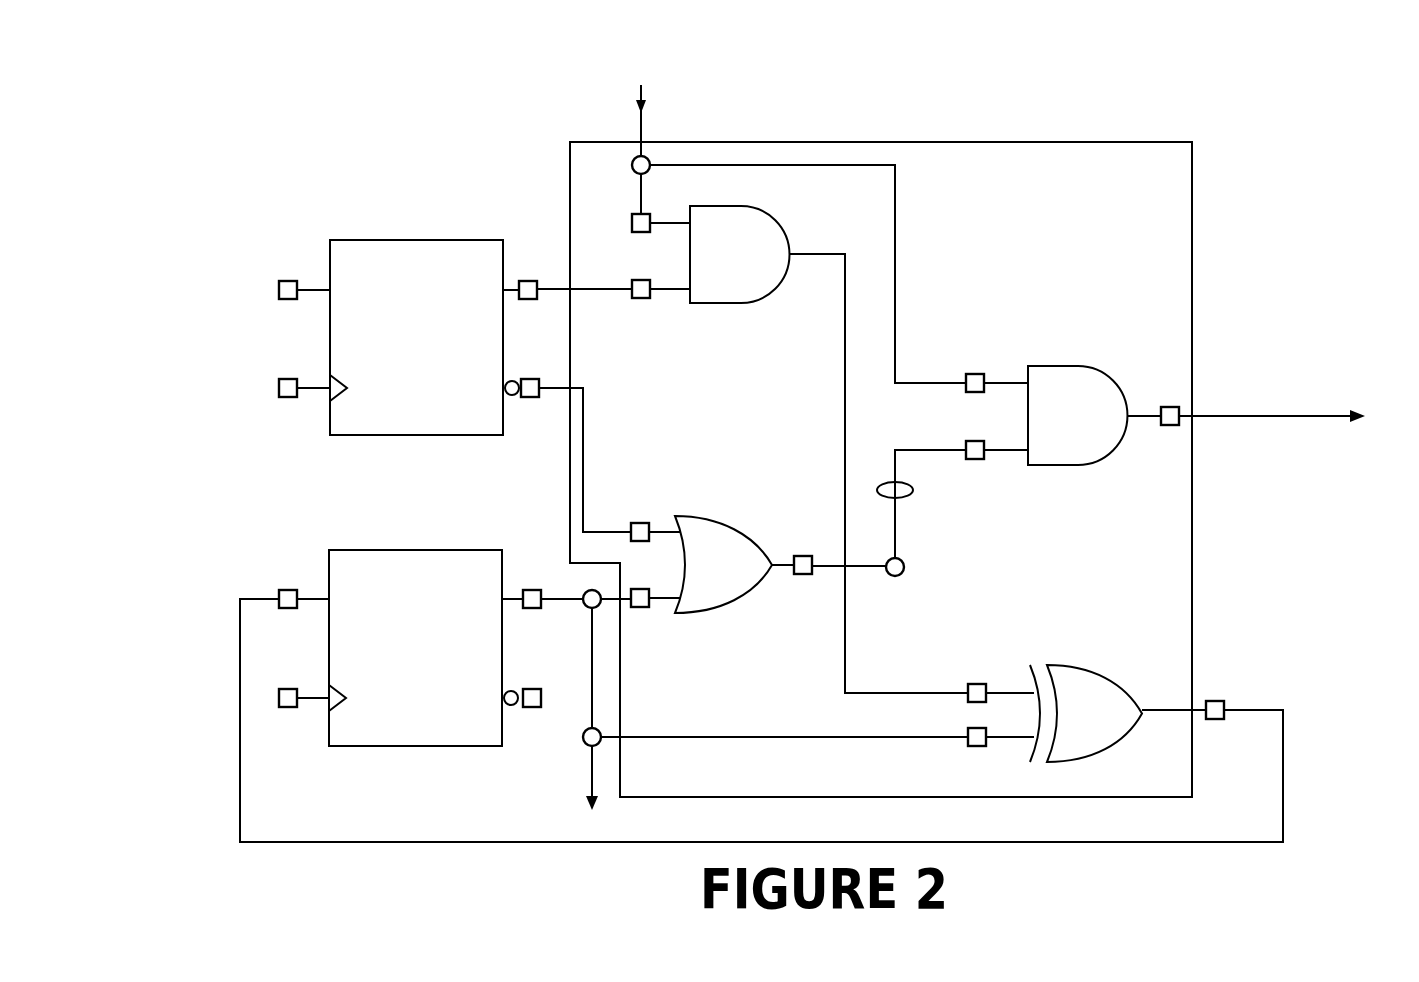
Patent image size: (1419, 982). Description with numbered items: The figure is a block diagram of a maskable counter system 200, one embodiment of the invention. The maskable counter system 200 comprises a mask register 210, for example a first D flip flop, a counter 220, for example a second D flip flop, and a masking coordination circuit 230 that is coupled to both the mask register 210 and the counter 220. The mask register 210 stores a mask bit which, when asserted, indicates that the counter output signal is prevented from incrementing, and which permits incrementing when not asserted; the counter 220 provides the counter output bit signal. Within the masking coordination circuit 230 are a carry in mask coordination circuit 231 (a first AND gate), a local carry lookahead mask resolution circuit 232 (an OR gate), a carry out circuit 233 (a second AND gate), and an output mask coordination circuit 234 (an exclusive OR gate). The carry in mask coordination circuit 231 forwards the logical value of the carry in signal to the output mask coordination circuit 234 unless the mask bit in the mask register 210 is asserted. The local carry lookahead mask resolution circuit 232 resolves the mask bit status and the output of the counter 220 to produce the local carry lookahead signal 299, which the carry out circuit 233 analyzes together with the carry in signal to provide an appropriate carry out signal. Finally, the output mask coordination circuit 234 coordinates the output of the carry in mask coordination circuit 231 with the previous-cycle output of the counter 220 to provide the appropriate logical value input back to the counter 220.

The maskable counter system 200 is at (263, 75).
The mask register 210 is at (437, 362).
The counter 220 is at (437, 673).
The masking coordination circuit 230 is at (1160, 168).
The carry in mask coordination circuit 231 is at (750, 268).
The local carry lookahead mask resolution circuit 232 is at (743, 579).
The carry out circuit 233 is at (1087, 429).
The output mask coordination circuit 234 is at (1116, 730).
The local carry lookahead signal 299 is at (912, 495).